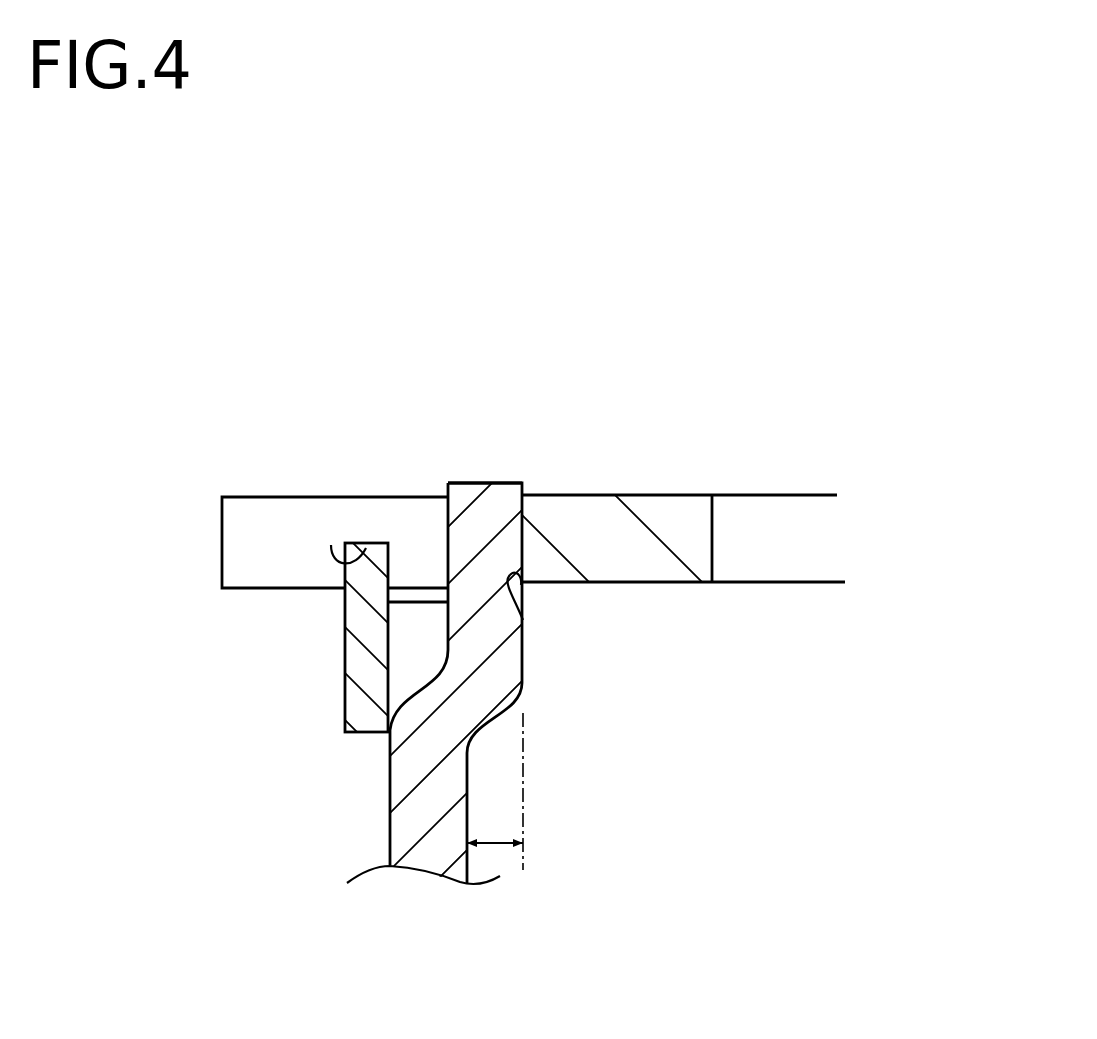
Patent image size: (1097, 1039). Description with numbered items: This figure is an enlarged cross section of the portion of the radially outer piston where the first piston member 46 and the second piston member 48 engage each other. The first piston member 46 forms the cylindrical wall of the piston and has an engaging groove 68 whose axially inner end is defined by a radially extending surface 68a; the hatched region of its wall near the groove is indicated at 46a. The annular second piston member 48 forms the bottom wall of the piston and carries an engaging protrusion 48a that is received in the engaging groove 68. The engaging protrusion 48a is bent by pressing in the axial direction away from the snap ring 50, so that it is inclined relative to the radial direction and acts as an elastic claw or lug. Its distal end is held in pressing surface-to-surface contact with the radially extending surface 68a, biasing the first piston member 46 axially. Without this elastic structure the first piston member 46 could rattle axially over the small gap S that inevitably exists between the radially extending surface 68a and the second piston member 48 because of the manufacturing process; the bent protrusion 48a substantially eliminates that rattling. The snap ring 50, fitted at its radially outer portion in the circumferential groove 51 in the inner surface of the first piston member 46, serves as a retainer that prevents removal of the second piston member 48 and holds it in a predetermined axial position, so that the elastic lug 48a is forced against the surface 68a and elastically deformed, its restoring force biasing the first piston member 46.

The first piston member 46 is at (650, 355).
The housing wall portion 46a is at (663, 523).
The second piston member 48 is at (340, 803).
The engaging protrusion 48a is at (478, 523).
The snap ring 50 is at (370, 658).
The circumferential groove 51 is at (331, 545).
The engaging groove 68 is at (300, 527).
The radially extending surface 68a is at (523, 620).
The gap S is at (492, 840).